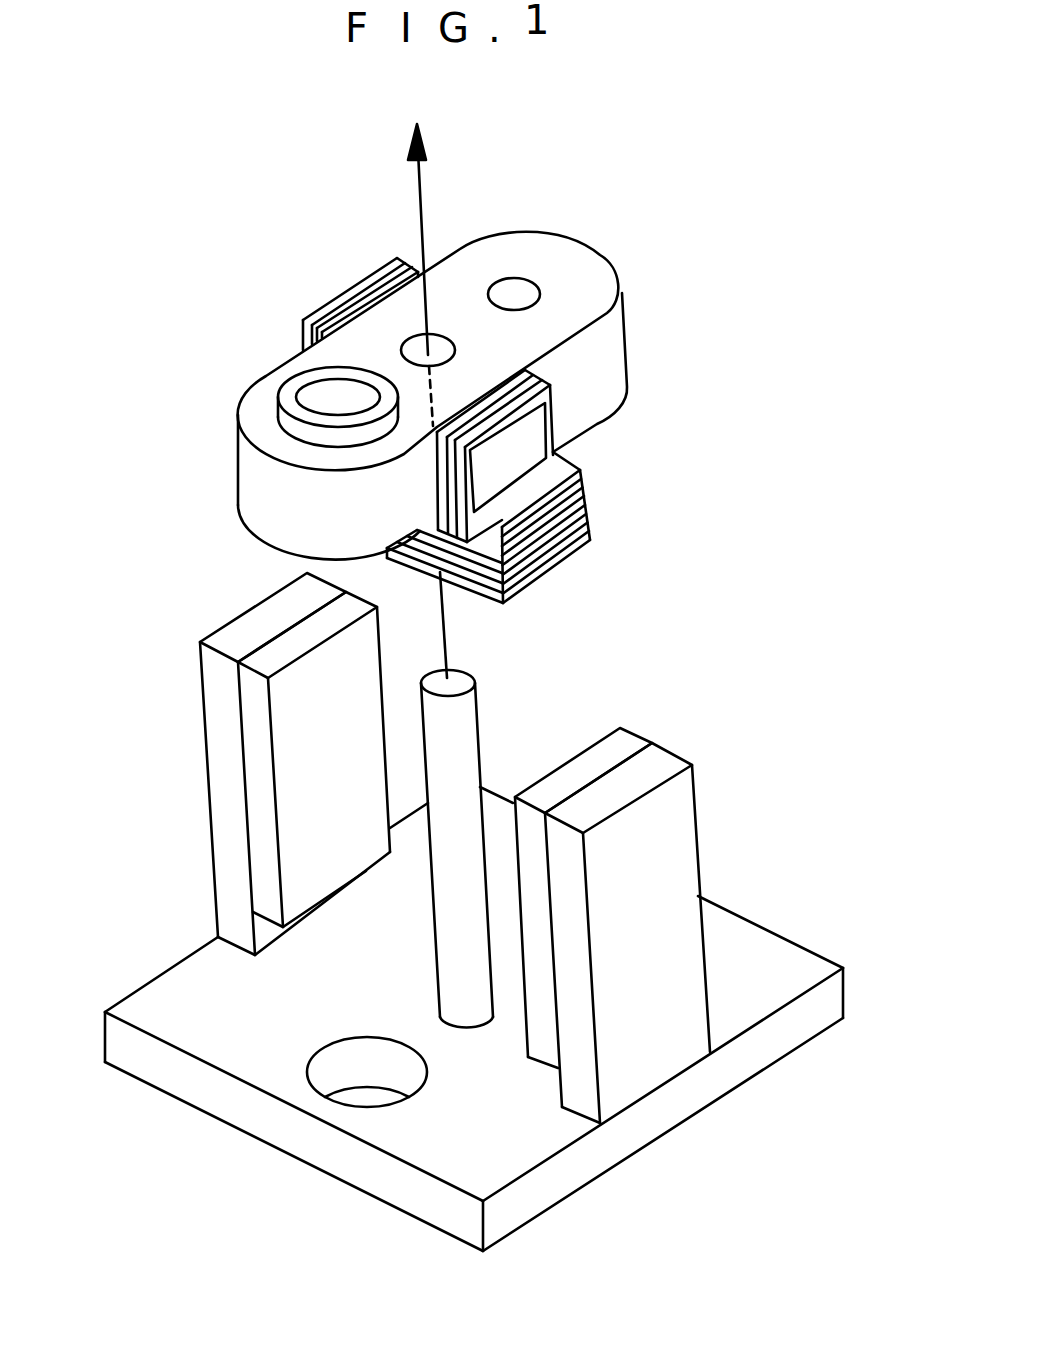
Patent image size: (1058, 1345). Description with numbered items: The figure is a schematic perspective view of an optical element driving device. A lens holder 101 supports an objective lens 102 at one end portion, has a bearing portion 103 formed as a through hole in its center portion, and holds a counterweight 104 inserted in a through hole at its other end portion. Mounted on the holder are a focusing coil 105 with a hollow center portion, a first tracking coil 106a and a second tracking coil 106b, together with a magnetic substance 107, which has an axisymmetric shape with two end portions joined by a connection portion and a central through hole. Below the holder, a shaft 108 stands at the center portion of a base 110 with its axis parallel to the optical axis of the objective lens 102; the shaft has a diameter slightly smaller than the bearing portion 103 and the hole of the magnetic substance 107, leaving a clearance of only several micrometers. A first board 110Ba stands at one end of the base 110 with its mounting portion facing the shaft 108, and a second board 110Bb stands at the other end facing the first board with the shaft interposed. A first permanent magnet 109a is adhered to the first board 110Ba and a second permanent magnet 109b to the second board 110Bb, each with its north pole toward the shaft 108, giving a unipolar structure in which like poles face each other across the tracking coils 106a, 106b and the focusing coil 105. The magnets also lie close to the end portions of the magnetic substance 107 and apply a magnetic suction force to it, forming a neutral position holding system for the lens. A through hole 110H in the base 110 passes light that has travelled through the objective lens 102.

The lens holder 101 is at (570, 257).
The objective lens 102 is at (288, 385).
The bearing portion 103 is at (413, 347).
The counterweight 104 is at (517, 292).
The focusing coil 105 is at (548, 568).
The first tracking coil 106a is at (320, 312).
The second tracking coil 106b is at (551, 407).
The magnetic substance 107 is at (582, 471).
The shaft 108 is at (468, 710).
The first permanent magnet 109a is at (258, 780).
The second permanent magnet 109b is at (630, 742).
The base 110 is at (733, 1012).
The first board 110Ba is at (207, 772).
The second board 110Bb is at (685, 923).
The through hole 110H is at (322, 1082).